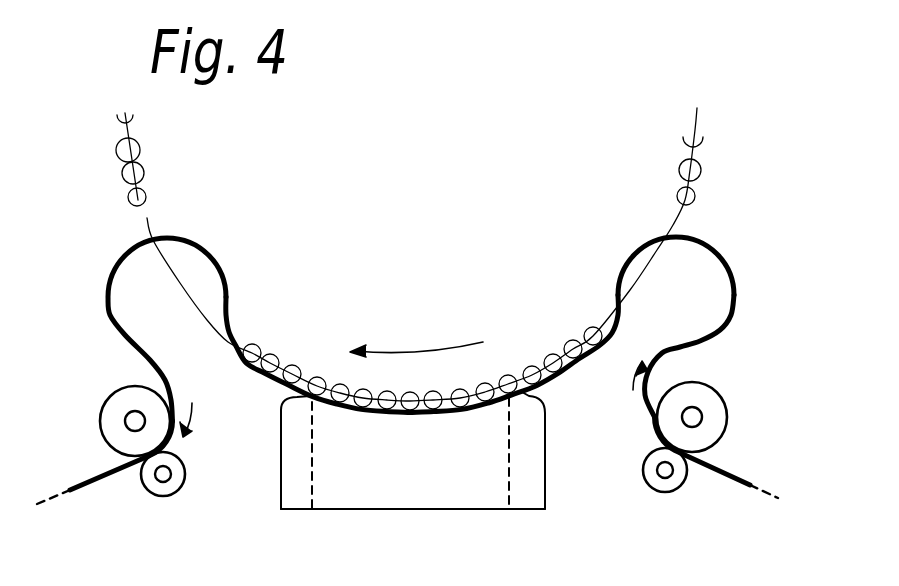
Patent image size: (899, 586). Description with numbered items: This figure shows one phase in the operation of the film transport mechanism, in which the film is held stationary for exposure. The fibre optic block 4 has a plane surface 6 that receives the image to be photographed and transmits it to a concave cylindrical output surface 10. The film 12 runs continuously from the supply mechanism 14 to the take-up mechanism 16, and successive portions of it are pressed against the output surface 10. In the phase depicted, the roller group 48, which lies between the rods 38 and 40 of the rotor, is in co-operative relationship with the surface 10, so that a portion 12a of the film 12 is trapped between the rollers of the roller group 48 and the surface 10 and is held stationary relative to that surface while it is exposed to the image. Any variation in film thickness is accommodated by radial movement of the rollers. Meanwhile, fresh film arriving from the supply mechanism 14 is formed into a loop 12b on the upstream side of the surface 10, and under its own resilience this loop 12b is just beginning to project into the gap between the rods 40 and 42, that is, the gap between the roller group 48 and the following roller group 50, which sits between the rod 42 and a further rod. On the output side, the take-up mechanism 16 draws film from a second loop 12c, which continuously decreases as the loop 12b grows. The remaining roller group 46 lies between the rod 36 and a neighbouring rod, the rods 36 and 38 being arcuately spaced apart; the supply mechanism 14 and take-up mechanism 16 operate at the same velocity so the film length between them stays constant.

The fibre optic block 4 is at (338, 498).
The plane surface 6 is at (436, 500).
The concave cylindrical output surface 10 is at (447, 418).
The film 12 is at (682, 345).
The portion of the film 12a is at (346, 416).
The loop 12b is at (733, 258).
The second loop 12c is at (116, 270).
The supply mechanism 14 is at (730, 440).
The take-up mechanism 16 is at (98, 434).
The rod 36 is at (147, 195).
The rod 38 is at (255, 344).
The rod 40 is at (591, 328).
The rod 42 is at (677, 196).
The roller group 46 is at (140, 165).
The roller group 48 is at (294, 365).
The roller group 50 is at (679, 168).